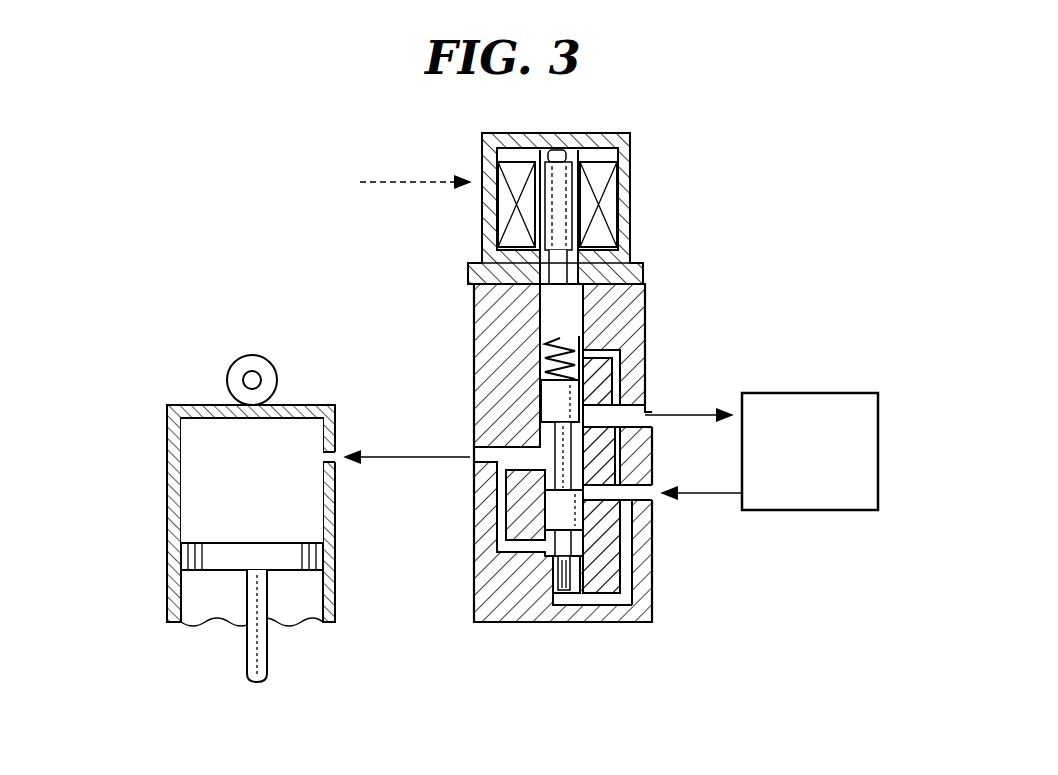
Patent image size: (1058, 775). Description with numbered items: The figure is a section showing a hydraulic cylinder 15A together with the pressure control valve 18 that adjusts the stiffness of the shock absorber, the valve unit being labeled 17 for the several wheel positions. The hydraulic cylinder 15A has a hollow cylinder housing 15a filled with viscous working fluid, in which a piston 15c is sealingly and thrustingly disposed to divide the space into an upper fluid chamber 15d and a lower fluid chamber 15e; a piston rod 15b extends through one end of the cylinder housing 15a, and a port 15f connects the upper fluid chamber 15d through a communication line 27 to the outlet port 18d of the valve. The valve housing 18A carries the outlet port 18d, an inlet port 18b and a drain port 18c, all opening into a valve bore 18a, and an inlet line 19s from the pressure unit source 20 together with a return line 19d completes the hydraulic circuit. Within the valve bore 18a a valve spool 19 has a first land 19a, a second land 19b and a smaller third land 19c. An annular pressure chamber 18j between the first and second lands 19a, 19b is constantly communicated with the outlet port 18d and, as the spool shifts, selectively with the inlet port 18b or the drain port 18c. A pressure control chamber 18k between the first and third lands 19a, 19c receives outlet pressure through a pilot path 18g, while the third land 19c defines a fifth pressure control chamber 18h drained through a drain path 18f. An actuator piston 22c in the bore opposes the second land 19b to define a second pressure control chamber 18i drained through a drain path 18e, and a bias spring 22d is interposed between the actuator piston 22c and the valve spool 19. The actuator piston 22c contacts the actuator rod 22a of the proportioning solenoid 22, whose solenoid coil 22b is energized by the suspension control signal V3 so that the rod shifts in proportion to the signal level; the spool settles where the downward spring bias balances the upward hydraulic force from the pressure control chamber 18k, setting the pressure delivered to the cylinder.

The hydraulic cylinder 15A is at (280, 405).
The cylinder housing 15a is at (173, 500).
The piston rod 15b is at (268, 650).
The piston 15c is at (325, 556).
The upper fluid chamber 15d is at (200, 446).
The lower fluid chamber 15e is at (197, 605).
The port 15f is at (333, 455).
The communication line 27 is at (377, 460).
The control valve assembly 17FL~RR 17 is at (660, 270).
The pressure control valve 18 is at (480, 632).
The valve housing 18A is at (650, 558).
The valve bore 18a is at (540, 340).
The inlet port 18b is at (656, 508).
The drain port 18c is at (622, 398).
The outlet port 18d is at (500, 443).
The drain path 18e is at (620, 355).
The drain path 18f is at (594, 612).
The pilot path 18g is at (495, 580).
The fifth pressure control chamber 18h is at (608, 615).
The second pressure control chamber 18i is at (645, 318).
The annular pressure chamber 18j is at (648, 414).
The pressure control chamber 18k is at (574, 610).
The valve spool 19 is at (575, 532).
The first land 19a is at (548, 507).
The second land 19b is at (541, 400).
The third land 19c is at (557, 590).
The return line 19d is at (690, 417).
The supply line 19s is at (676, 493).
The pressure unit source 20 is at (800, 393).
The proportioning solenoid 22 is at (632, 178).
The actuator rod 22a is at (567, 270).
The solenoid coil 22b is at (598, 168).
The actuator piston 22c is at (541, 300).
The bias spring 22d is at (543, 372).
The suspension control signal V3 is at (415, 171).